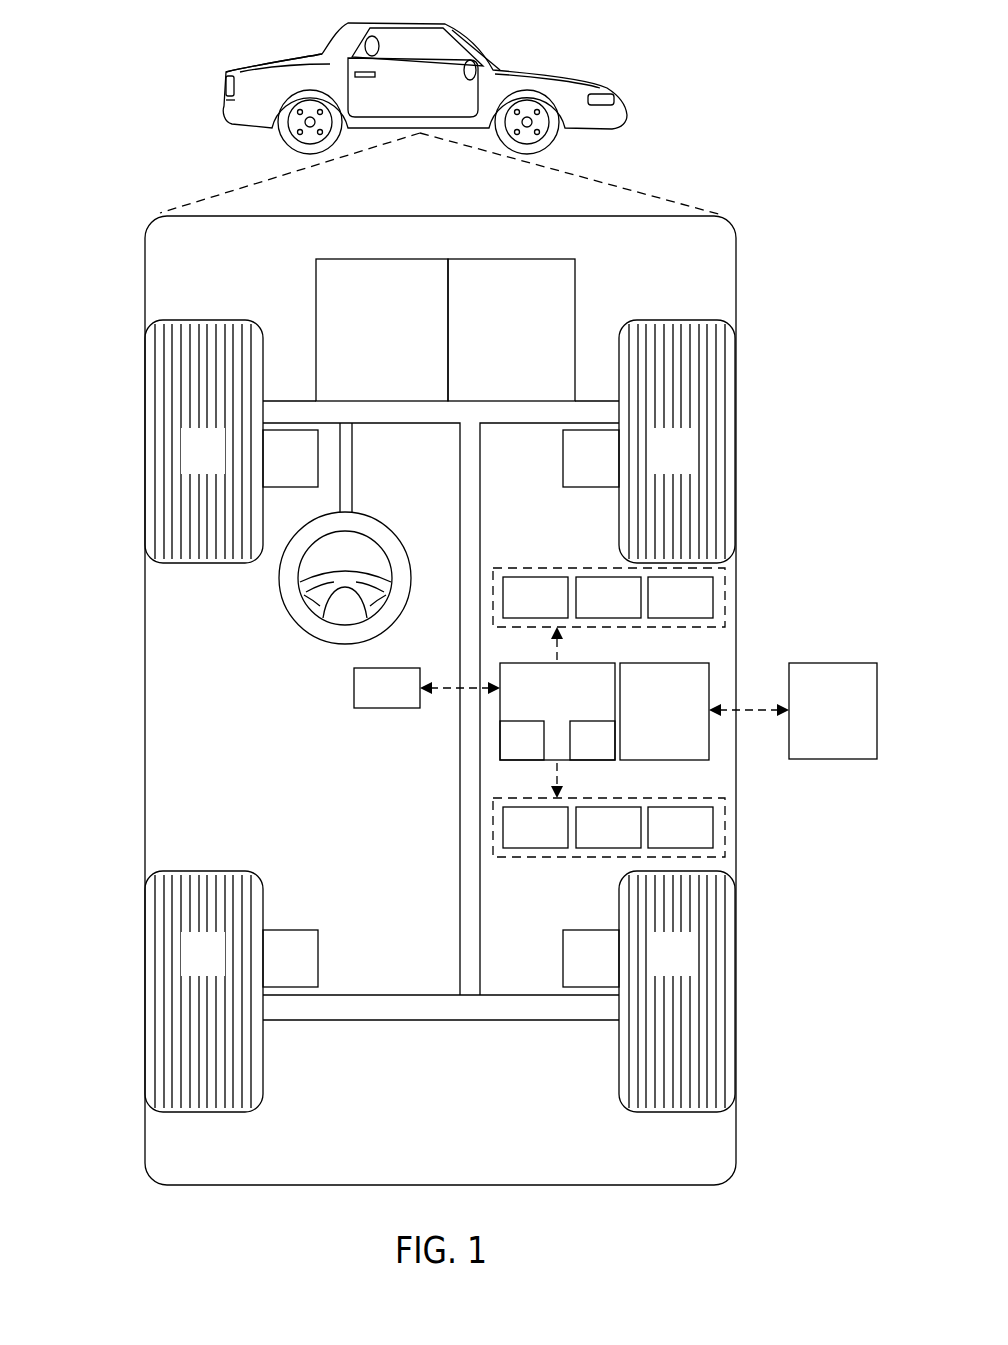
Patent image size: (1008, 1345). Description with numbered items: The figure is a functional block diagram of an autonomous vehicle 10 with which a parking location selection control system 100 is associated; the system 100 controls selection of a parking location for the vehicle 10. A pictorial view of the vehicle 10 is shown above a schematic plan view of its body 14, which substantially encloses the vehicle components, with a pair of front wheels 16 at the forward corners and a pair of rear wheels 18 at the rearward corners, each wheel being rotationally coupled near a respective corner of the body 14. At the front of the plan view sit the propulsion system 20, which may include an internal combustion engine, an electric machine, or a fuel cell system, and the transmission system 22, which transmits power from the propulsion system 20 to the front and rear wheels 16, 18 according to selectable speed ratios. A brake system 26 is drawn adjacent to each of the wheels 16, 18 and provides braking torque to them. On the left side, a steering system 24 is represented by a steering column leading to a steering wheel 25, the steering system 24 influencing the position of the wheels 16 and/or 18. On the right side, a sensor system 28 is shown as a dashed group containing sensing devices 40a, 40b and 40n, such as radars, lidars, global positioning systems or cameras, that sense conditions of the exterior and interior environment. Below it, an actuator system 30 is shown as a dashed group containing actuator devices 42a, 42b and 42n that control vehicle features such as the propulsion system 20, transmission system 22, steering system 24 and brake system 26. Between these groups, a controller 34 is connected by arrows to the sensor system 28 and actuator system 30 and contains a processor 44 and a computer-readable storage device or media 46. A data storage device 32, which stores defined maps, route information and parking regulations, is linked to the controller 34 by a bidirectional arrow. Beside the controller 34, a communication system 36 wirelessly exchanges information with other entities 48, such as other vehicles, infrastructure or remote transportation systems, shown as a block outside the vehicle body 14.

The vehicle 10 is at (222, 88).
The parking location selection control system 100 is at (775, 198).
The body 14 is at (144, 712).
The front wheels 16 is at (188, 463).
The rear wheels 18 is at (188, 966).
The propulsion system 20 is at (366, 350).
The transmission system 22 is at (496, 350).
The steering system 24 is at (376, 465).
The steering wheel 25 is at (309, 632).
The brake system 26 is at (275, 471).
The sensor system 28 is at (546, 568).
The actuator system 30 is at (547, 857).
The data storage device 32 is at (372, 702).
The controller 34 is at (542, 706).
The communication system 36 is at (649, 725).
The sensing device 40a is at (513, 611).
The sensing device 40b is at (586, 611).
The sensing device 40n is at (658, 611).
The actuator device 42a is at (513, 841).
The actuator device 42b is at (586, 841).
The actuator device 42n is at (658, 841).
The processor 44 is at (507, 755).
The computer-readable storage device or media 46 is at (577, 755).
The other entities 48 is at (818, 725).